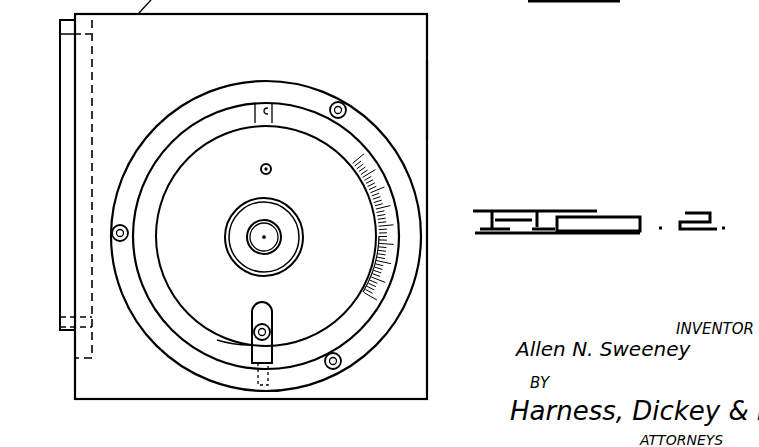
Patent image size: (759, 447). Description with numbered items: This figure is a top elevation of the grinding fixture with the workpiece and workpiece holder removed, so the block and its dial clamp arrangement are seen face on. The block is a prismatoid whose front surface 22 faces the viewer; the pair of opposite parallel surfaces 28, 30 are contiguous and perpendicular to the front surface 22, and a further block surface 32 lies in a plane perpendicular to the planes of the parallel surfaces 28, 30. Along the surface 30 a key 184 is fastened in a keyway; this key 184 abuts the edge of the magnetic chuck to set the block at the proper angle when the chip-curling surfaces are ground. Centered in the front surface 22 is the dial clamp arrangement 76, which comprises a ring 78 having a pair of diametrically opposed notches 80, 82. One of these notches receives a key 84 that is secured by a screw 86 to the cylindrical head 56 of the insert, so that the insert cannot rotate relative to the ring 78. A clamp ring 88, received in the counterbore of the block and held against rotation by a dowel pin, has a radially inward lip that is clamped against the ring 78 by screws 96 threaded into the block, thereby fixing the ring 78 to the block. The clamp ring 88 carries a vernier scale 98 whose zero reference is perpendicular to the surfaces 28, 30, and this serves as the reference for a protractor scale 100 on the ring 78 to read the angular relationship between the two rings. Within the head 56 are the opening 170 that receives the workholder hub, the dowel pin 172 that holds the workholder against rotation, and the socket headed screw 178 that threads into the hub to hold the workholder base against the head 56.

The front surface 22 is at (408, 50).
The parallel surface 28 is at (428, 86).
The parallel surface 30 is at (73, 60).
The block surface 32 is at (362, 400).
The head 56 is at (235, 191).
The dial clamp arrangement 76 is at (305, 85).
The ring 78 is at (365, 160).
The notch 80 is at (272, 117).
The notch 82 is at (265, 352).
The key 84 is at (250, 342).
The screw 86 is at (269, 327).
The clamp ring 88 is at (197, 110).
The screws 96 is at (347, 110).
The vernier scale 98 is at (397, 215).
The protractor scale 100 is at (375, 288).
The opening 170 is at (275, 208).
The dowel pin 172 is at (271, 167).
The socket headed screw 178 is at (270, 237).
The key 184 is at (67, 213).